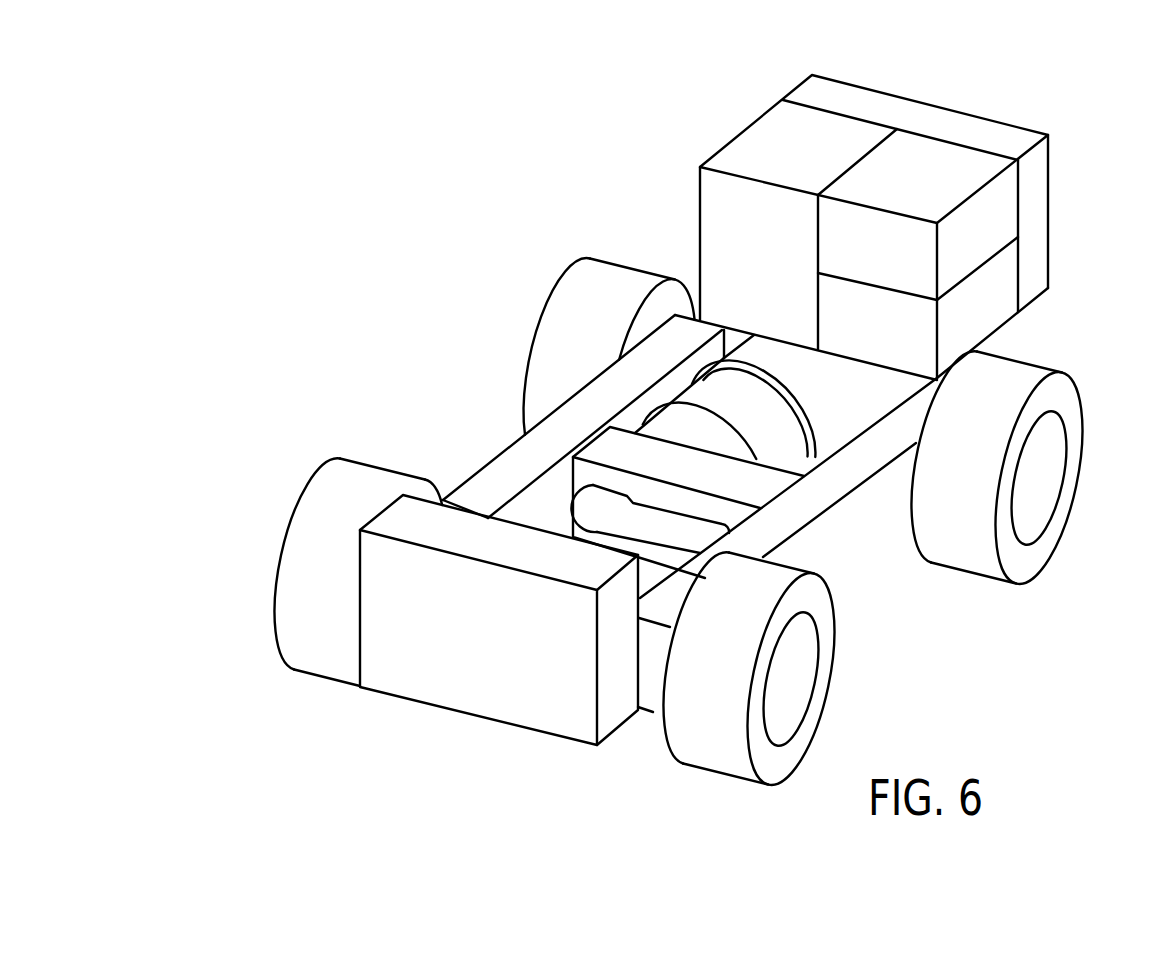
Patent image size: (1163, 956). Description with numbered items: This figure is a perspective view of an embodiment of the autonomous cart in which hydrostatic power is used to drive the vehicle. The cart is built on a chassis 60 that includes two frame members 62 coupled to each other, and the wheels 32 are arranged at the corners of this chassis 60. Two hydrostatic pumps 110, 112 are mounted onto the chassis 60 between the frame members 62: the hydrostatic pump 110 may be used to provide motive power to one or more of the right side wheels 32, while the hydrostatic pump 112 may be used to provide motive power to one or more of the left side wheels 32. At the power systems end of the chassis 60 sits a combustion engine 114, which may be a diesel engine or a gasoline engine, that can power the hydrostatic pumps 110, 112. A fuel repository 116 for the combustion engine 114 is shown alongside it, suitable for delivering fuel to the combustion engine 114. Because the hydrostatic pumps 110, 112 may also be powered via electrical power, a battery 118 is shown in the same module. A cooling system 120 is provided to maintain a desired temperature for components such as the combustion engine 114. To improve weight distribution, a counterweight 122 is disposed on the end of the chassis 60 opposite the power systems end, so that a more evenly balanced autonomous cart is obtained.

The wheels 32 is at (1030, 562).
The chassis 60 is at (684, 513).
The frame members 62 is at (828, 572).
The hydrostatic pump 110 is at (794, 410).
The hydrostatic pump 112 is at (781, 443).
The combustion engine 114 is at (770, 140).
The fuel repository 116 is at (997, 208).
The battery 118 is at (1000, 288).
The cooling system 120 is at (904, 216).
The counterweight 122 is at (418, 725).